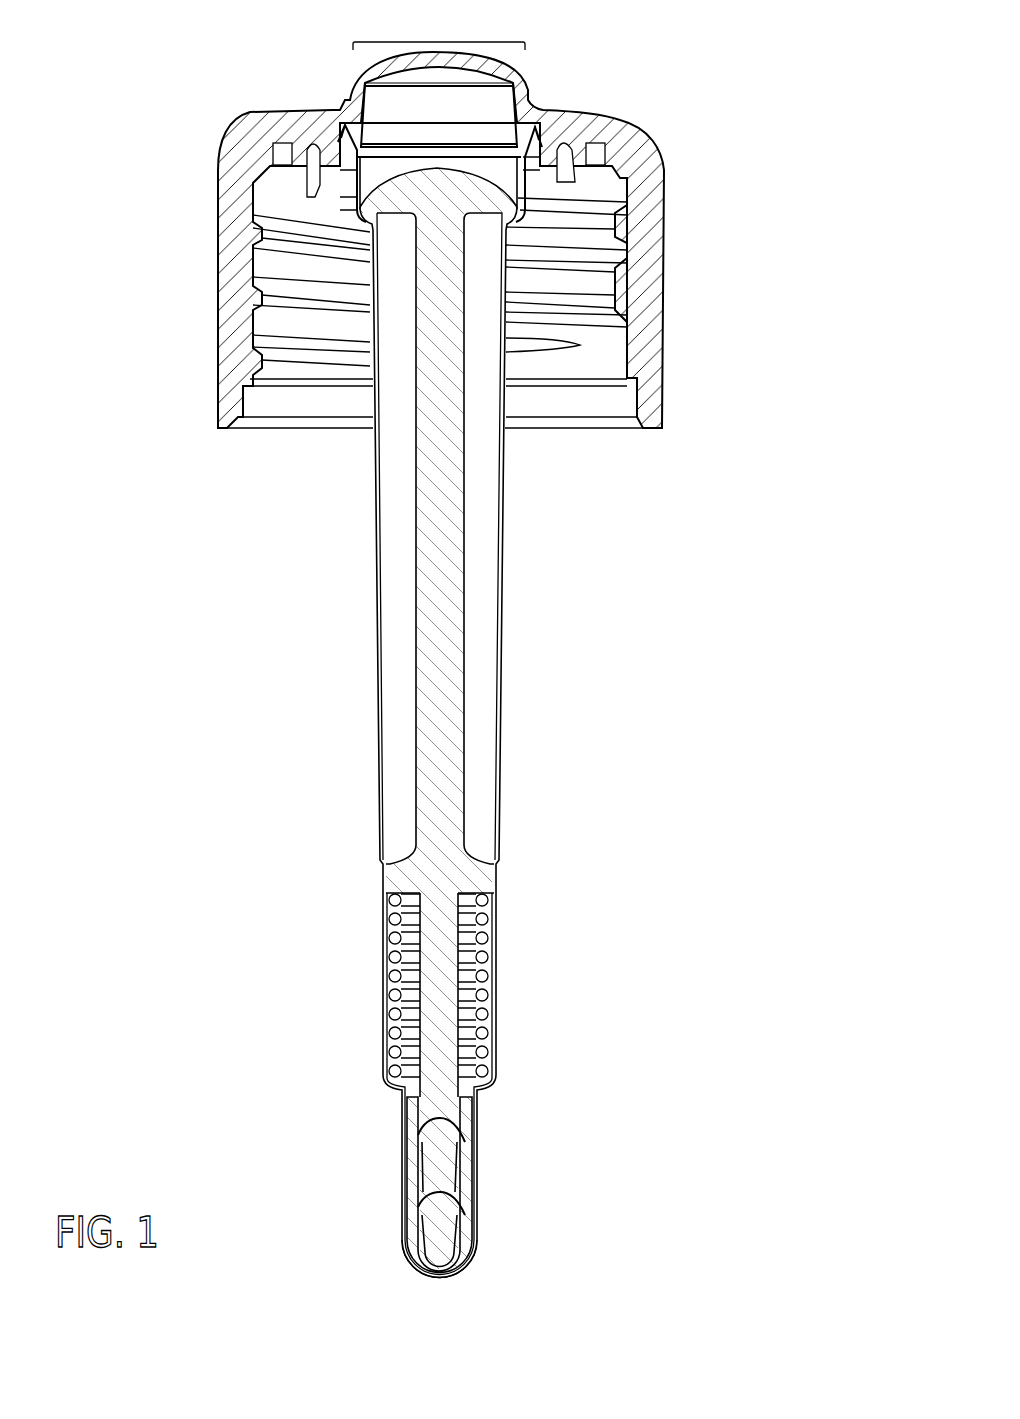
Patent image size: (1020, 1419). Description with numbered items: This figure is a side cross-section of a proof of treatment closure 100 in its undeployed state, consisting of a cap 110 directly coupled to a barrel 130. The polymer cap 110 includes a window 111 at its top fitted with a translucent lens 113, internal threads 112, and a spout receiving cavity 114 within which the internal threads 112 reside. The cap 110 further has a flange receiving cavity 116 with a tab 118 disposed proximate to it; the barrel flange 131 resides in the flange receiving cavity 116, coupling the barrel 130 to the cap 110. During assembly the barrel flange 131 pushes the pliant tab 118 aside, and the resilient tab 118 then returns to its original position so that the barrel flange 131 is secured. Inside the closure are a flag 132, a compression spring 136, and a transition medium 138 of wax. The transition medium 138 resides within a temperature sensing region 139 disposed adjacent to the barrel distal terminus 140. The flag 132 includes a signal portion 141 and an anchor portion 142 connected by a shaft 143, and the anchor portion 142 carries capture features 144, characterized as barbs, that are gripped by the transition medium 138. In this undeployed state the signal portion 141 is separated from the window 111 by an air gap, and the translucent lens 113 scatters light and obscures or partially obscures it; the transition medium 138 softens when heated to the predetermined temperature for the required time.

The proof of treatment closure 100 is at (486, 652).
The cap 110 is at (452, 281).
The window 111 is at (436, 38).
The internal threads 112 is at (583, 342).
The translucent lens 113 is at (457, 60).
The spout receiving cavity 114 is at (345, 447).
The flange receiving cavity 116 is at (538, 128).
The tab 118 is at (537, 163).
The barrel 130 is at (402, 691).
The barrel flange 131 is at (341, 130).
The flag 132 is at (485, 468).
The spring 136 is at (483, 937).
The transition medium 138 is at (463, 1177).
The temperature sensing region 139 is at (460, 1096).
The barrel distal terminus 140 is at (433, 1281).
The signal portion 141 is at (420, 196).
The anchor portion 142 is at (440, 1097).
The shaft 143 is at (463, 620).
The capture features 144 is at (440, 1118).